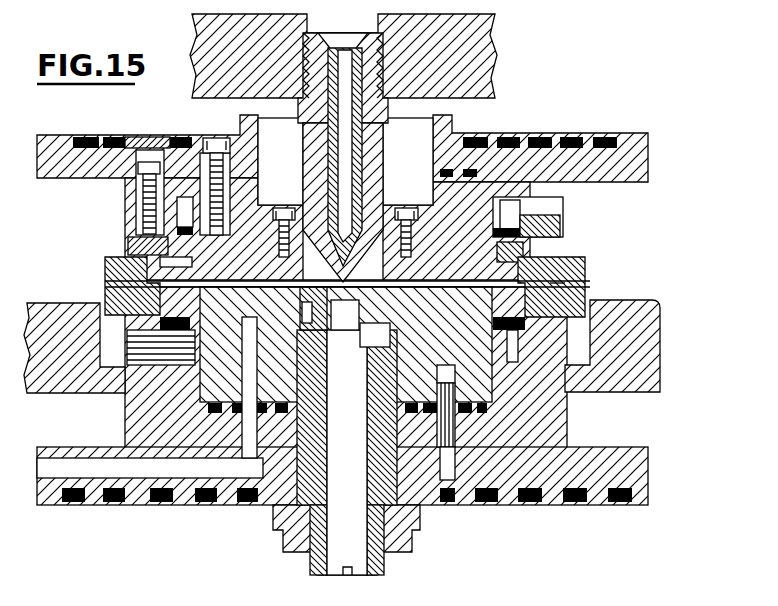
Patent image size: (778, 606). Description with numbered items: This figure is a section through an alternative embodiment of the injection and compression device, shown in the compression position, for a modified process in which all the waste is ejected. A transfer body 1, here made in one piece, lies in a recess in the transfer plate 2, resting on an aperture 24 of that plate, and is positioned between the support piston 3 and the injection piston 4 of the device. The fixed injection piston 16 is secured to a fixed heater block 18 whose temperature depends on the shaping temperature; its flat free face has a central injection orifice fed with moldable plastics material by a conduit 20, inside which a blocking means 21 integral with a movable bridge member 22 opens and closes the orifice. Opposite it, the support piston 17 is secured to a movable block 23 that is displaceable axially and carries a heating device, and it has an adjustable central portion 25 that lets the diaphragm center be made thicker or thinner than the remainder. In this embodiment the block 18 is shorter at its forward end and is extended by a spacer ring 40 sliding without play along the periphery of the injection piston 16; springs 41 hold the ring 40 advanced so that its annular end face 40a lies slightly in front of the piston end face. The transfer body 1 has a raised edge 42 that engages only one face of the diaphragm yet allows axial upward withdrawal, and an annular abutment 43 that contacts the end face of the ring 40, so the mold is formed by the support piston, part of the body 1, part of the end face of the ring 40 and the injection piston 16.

The transfer body 1 is at (545, 291).
The transfer plate 2 is at (646, 325).
The support piston 3 is at (519, 515).
The injection piston 4 is at (520, 62).
The injection piston 16 is at (540, 256).
The support piston 17 is at (408, 372).
The fixed heater block 18 is at (636, 168).
The conduit 20 is at (352, 141).
The blocking means 21 is at (372, 168).
The movable bridge member 22 is at (486, 87).
The movable block 23 is at (628, 456).
The aperture 24 is at (107, 373).
The central portion 25 is at (310, 317).
The spacer ring 40 is at (505, 258).
The annular end face 40a is at (567, 281).
The springs 41 is at (150, 166).
The raised edge 42 is at (167, 289).
The annular abutment 43 is at (130, 258).